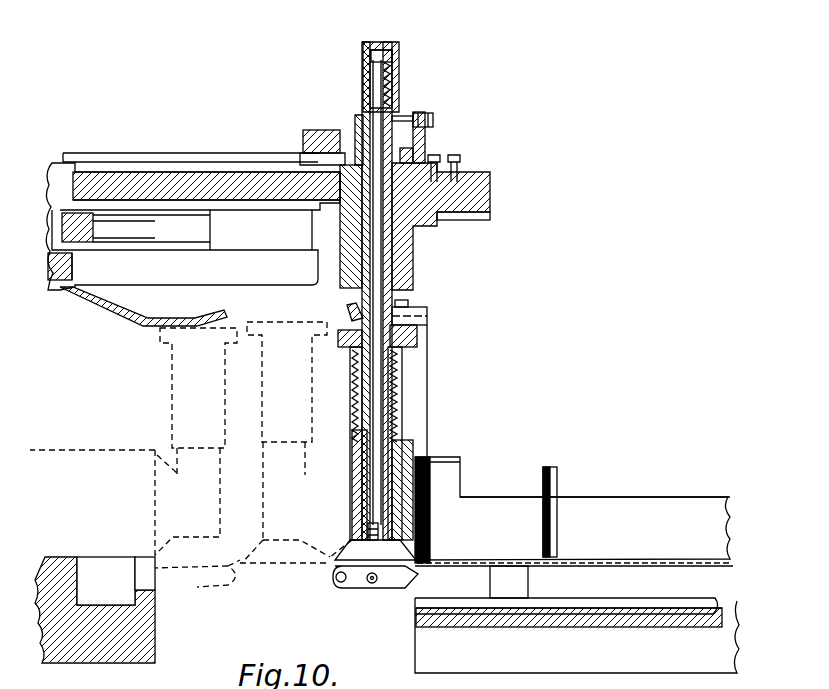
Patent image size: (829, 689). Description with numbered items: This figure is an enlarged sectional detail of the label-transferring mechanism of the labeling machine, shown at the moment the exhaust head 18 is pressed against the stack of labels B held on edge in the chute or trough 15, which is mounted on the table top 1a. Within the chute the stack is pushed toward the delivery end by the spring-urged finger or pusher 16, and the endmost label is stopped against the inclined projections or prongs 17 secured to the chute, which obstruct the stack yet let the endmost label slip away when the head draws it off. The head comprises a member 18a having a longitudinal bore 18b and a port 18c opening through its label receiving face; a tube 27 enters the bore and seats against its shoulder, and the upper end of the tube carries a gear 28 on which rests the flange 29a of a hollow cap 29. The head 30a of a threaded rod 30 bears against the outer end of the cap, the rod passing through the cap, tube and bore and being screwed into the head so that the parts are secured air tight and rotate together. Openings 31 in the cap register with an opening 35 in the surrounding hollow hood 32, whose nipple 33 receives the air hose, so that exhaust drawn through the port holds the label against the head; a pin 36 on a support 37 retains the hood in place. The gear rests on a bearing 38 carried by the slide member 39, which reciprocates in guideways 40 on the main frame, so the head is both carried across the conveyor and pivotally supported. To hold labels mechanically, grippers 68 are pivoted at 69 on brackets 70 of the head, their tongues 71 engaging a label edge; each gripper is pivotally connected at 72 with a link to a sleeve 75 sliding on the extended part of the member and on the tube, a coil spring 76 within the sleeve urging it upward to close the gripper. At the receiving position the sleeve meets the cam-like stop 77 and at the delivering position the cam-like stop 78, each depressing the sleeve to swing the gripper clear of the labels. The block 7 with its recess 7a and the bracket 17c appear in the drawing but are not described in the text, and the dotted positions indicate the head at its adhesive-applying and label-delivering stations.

The table top 1a is at (727, 614).
The block 7 is at (156, 640).
The recess 7a is at (116, 581).
The chute or trough 15 is at (574, 531).
The finger or pusher 16 is at (557, 482).
The projections or prongs 17 is at (406, 570).
The bracket 17c is at (427, 446).
The transferring head 18 is at (213, 514).
The member 18a is at (405, 460).
The longitudinal bore 18b is at (355, 462).
The port 18c is at (572, 510).
The tube 27 is at (386, 302).
The gear 28 is at (356, 130).
The hollow cap 29 is at (392, 106).
The flange or extension 29a is at (362, 120).
The threaded rod 30 is at (380, 266).
The head 30a is at (397, 46).
The openings 31 is at (395, 82).
The hollow hood 32 is at (380, 42).
The nipple 33 is at (77, 227).
The opening 35 is at (404, 118).
The pin 36 is at (438, 118).
The support 37 is at (425, 152).
The bearing 38 is at (425, 140).
The slide member 39 is at (482, 192).
The guideways 40 is at (65, 170).
The grippers 68 is at (262, 580).
The pivot 69 is at (339, 580).
The brackets 70 is at (352, 548).
The tongues 71 is at (320, 560).
The pivot 72 is at (374, 584).
The sleeve 75 is at (176, 407).
The coil spring 76 is at (395, 366).
The cam-like stop 77 is at (350, 312).
The cam-like stop 78 is at (198, 318).
The labels B is at (430, 497).